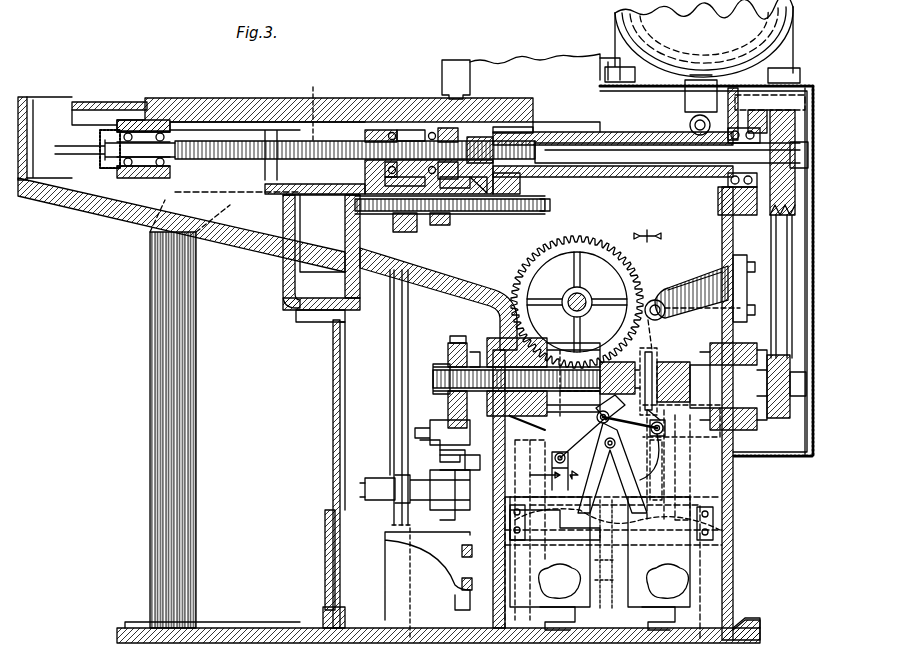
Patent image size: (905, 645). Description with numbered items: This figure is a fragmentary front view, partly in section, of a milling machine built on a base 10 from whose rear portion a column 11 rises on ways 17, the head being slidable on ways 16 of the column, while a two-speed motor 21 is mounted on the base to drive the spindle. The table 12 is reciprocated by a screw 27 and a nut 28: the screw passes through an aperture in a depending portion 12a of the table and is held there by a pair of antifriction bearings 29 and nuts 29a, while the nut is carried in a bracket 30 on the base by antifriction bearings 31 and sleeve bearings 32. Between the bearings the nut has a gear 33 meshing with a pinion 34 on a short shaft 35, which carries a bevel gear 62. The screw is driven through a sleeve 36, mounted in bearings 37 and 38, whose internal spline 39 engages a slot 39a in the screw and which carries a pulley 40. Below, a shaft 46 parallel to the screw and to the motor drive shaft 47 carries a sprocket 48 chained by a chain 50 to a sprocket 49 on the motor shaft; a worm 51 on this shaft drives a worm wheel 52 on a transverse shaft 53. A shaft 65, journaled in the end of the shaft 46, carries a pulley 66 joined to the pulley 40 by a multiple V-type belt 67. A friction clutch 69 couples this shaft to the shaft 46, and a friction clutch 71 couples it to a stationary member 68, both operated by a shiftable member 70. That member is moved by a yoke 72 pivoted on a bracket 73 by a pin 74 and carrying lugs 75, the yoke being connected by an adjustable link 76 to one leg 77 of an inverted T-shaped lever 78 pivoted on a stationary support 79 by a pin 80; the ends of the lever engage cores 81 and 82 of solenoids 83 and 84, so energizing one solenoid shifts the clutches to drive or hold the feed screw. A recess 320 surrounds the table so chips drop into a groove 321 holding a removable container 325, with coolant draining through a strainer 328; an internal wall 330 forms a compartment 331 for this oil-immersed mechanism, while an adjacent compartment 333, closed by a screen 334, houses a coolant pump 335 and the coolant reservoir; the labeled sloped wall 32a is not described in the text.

The base 10 is at (160, 440).
The column 11 is at (508, 62).
The table 12 is at (340, 99).
The depending portion 12a is at (142, 120).
The ways 16 is at (452, 62).
The ways 17 is at (577, 132).
The two-speed motor 21 is at (730, 22).
The screw 27 is at (262, 140).
The nut 28 is at (432, 128).
The antifriction bearings 29 is at (127, 132).
The nuts 29a is at (107, 130).
The bracket 30 is at (368, 175).
The antifriction bearings 31 is at (390, 131).
The sleeve bearings 32 is at (372, 130).
The sloped wall 32a is at (224, 228).
The gear 33 is at (401, 129).
The pinion 34 is at (412, 222).
The short shaft 35 is at (448, 225).
The sleeve 36 is at (620, 178).
The bearing 37 is at (521, 185).
The bearing 38 is at (728, 182).
The internal spline 39 is at (505, 138).
The slot 39a is at (315, 103).
The pulley 40 is at (795, 125).
The shaft 46 is at (490, 345).
The drive shaft 47 is at (433, 425).
The sprocket 48 is at (450, 358).
The sprocket 49 is at (450, 461).
The chain 50 is at (452, 343).
The worm 51 is at (543, 413).
The worm wheel 52 is at (598, 252).
The shaft 53 is at (571, 296).
The bevel gear 62 is at (480, 195).
The shaft 65 is at (718, 355).
The pulley 66 is at (788, 420).
The multiple V-type belt 67 is at (786, 289).
The stationary member 68 is at (681, 462).
The friction clutch 69 is at (653, 370).
The shiftable member 70 is at (654, 402).
The friction clutch 71 is at (672, 375).
The yoke 72 is at (654, 300).
The bracket 73 is at (695, 280).
The pin 74 is at (690, 284).
The lugs 75 is at (678, 481).
The adjustable link 76 is at (634, 424).
The leg 77 is at (600, 427).
The inverted T-shaped lever 78 is at (654, 457).
The stationary support 79 is at (580, 450).
The pin 80 is at (584, 468).
The core 81 is at (613, 540).
The core 82 is at (668, 455).
The solenoid 83 is at (550, 563).
The solenoid 84 is at (654, 563).
The recess 320 is at (47, 122).
The groove 321 is at (283, 272).
The container 325 is at (321, 246).
The strainer 328 is at (318, 310).
The internal wall 330 is at (496, 608).
The compartment 331 is at (736, 568).
The compartment 333 is at (345, 458).
The screen 334 is at (333, 440).
The coolant pump 335 is at (384, 432).